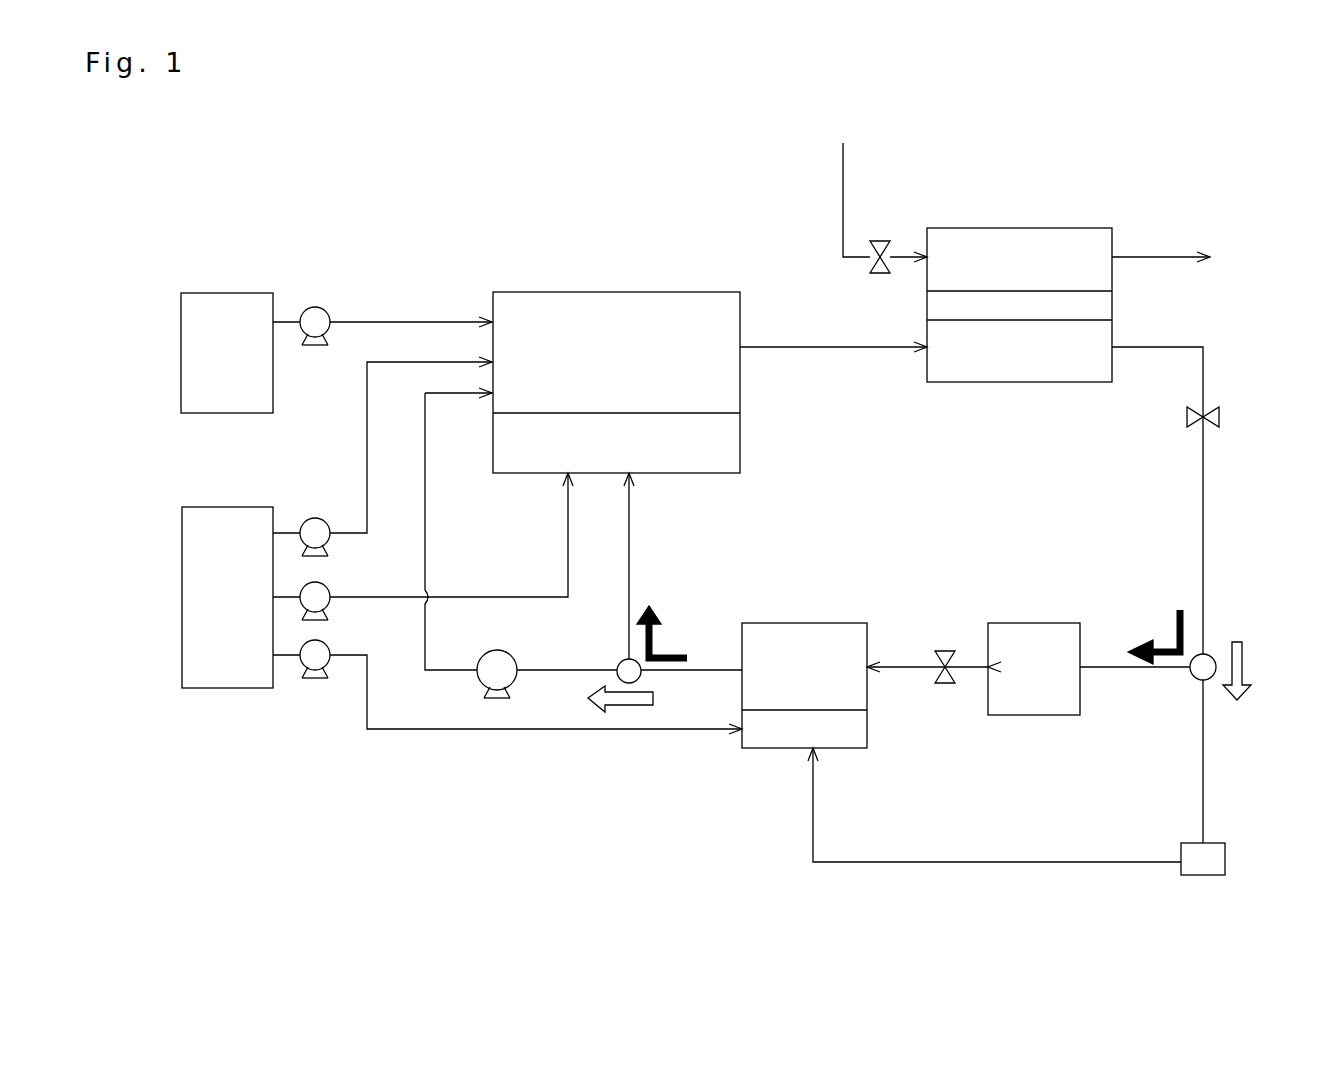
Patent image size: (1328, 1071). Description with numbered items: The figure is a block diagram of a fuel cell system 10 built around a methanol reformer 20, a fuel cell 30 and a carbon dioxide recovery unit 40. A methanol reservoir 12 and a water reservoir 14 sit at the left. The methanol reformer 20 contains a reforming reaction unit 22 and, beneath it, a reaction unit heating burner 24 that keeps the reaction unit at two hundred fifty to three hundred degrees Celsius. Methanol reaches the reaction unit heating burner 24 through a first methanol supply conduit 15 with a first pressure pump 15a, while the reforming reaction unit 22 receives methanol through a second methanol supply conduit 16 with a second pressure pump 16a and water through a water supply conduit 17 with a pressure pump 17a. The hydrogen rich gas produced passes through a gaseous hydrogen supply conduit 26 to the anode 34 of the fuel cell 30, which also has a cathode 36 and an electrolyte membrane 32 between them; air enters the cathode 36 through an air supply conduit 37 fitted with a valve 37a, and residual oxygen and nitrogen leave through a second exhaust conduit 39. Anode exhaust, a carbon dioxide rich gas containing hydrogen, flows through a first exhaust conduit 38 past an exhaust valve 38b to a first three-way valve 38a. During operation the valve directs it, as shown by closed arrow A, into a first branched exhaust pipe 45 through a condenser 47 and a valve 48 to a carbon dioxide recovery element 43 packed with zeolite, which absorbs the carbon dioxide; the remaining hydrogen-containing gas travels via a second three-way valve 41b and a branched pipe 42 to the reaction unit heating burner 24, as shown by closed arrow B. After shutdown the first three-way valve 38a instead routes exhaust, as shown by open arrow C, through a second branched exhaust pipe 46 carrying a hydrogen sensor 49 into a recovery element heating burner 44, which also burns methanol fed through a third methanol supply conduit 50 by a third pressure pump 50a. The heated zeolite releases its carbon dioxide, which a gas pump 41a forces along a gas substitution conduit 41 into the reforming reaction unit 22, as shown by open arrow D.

The fuel cell system 10 is at (552, 165).
The methanol reservoir 12 is at (228, 688).
The water reservoir 14 is at (232, 293).
The first methanol supply conduit 15 is at (450, 597).
The first pressure pump 15a is at (318, 582).
The second methanol supply conduit 16 is at (367, 420).
The second pressure pump 16a is at (318, 518).
The water supply conduit 17 is at (397, 322).
The pressure pump 17a is at (315, 307).
The methanol reformer 20 is at (630, 292).
The reforming reaction unit 22 is at (525, 310).
The reaction unit heating burner 24 is at (730, 448).
The gaseous hydrogen supply conduit 26 is at (853, 350).
The fuel cell 30 is at (1018, 382).
The electrolyte membrane 32 is at (1097, 307).
The anode 34 is at (1092, 375).
The cathode 36 is at (1078, 243).
The air supply conduit 37 is at (843, 205).
The valve 37a is at (875, 268).
The first exhaust conduit 38 is at (1175, 347).
The first three-way valve 38a is at (1192, 676).
The exhaust valve 38b is at (1220, 420).
The second exhaust conduit 39 is at (1155, 257).
The carbon dioxide recovery unit 40 is at (840, 623).
The gas substitution conduit 41 is at (425, 512).
The gas pump 41a is at (477, 678).
The second three-way valve 41b is at (620, 662).
The branched pipe 42 is at (630, 565).
The carbon dioxide recovery element 43 is at (790, 638).
The recovery element heating burner 44 is at (845, 742).
The first branched exhaust pipe 45 is at (1123, 668).
The second branched exhaust pipe 46 is at (1050, 862).
The condenser 47 is at (1045, 623).
The valve 48 is at (945, 648).
The hydrogen sensor 49 is at (1190, 877).
The third methanol supply conduit 50 is at (605, 730).
The third pressure pump 50a is at (318, 640).
The closed arrow A is at (1185, 628).
The closed arrow B is at (655, 636).
The open arrow C is at (1243, 660).
The open arrow D is at (637, 703).